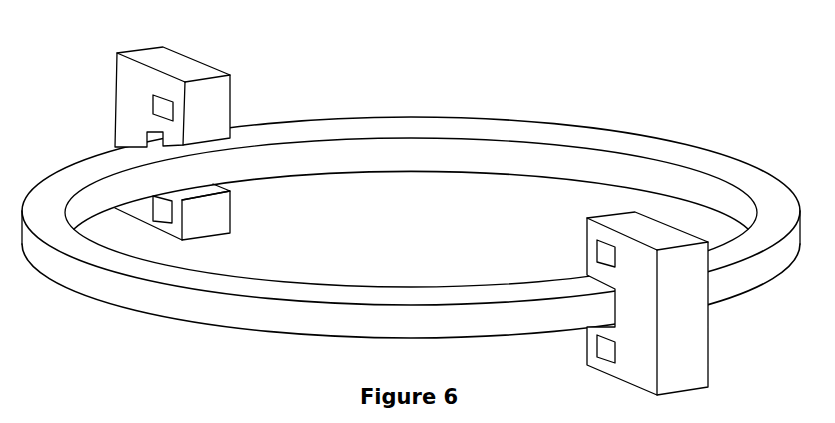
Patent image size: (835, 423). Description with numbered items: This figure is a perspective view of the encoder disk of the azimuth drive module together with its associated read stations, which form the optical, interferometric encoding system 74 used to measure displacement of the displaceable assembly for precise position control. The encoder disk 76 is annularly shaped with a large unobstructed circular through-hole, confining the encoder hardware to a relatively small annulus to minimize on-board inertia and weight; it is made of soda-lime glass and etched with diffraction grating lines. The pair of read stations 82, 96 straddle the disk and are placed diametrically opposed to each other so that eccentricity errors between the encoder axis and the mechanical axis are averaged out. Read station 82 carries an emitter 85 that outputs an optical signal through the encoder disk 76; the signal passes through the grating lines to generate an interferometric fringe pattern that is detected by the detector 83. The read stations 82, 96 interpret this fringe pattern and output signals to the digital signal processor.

The interferometric encoding system 74 is at (411, 206).
The encoder disk 76 is at (593, 138).
The read station 82 is at (151, 82).
The detector 83 is at (168, 208).
The emitter 85 is at (163, 100).
The read station 96 is at (692, 335).